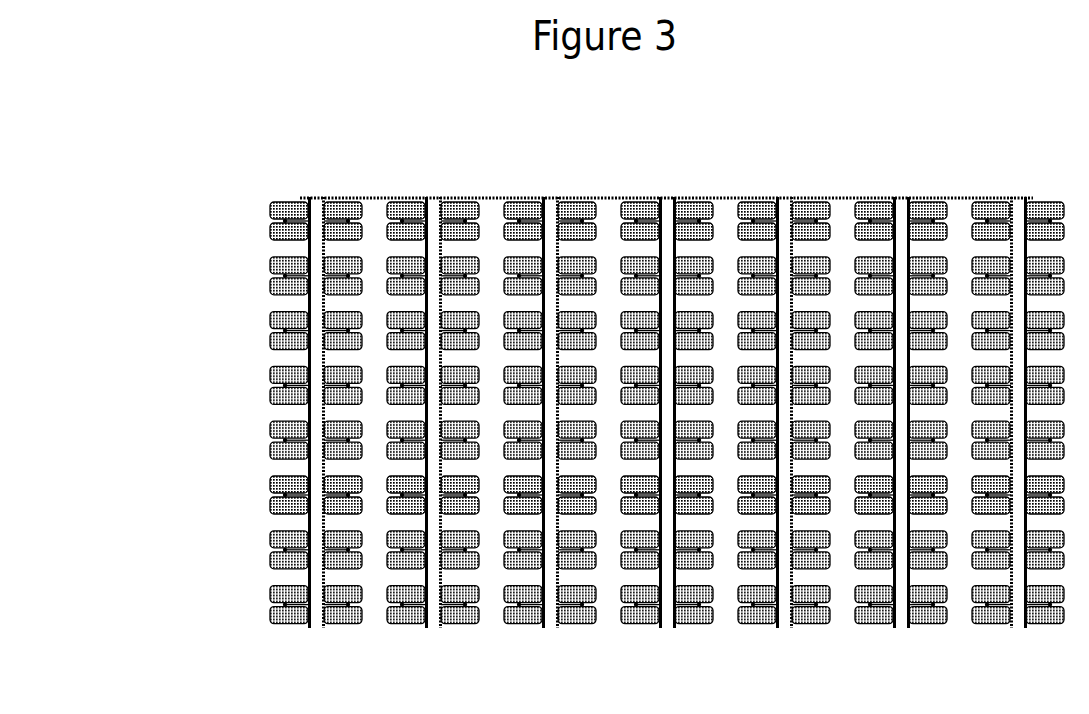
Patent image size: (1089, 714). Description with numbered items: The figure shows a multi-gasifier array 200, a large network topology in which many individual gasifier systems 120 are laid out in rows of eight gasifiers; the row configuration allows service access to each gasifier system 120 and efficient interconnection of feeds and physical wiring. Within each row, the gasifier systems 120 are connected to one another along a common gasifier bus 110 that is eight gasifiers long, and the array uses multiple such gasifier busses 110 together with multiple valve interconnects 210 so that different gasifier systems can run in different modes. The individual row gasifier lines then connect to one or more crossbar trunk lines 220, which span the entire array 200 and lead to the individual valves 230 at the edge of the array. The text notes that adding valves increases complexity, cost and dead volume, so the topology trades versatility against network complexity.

The gasifier bus 110 is at (445, 630).
The gasifier system 120 is at (265, 230).
The multi-gasifier array 200 is at (312, 147).
The Valve 2 interconnect 210 is at (425, 380).
The crossbar trunk line 220 is at (614, 195).
The Valve 5 230 is at (907, 197).